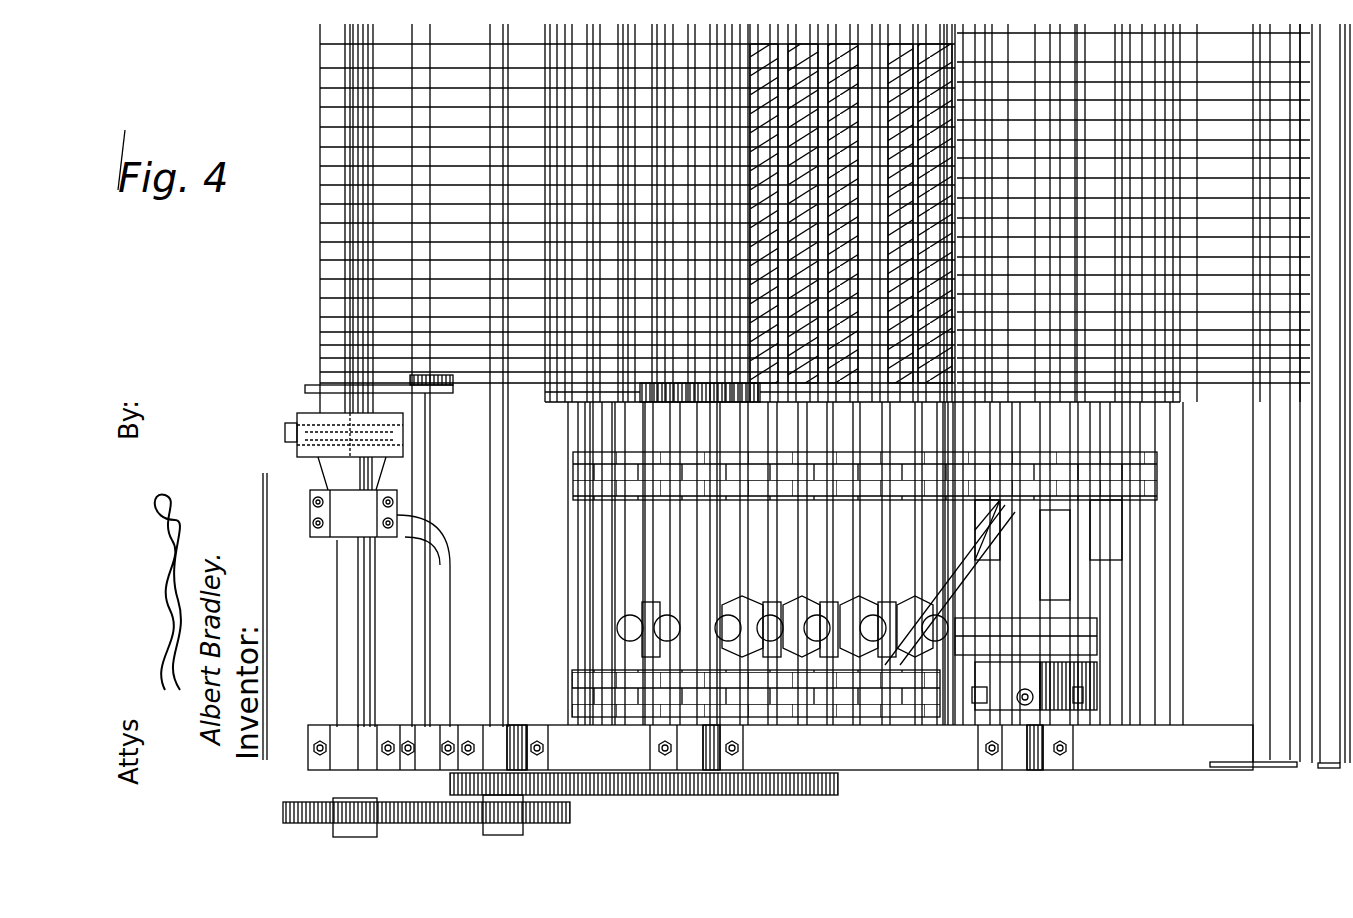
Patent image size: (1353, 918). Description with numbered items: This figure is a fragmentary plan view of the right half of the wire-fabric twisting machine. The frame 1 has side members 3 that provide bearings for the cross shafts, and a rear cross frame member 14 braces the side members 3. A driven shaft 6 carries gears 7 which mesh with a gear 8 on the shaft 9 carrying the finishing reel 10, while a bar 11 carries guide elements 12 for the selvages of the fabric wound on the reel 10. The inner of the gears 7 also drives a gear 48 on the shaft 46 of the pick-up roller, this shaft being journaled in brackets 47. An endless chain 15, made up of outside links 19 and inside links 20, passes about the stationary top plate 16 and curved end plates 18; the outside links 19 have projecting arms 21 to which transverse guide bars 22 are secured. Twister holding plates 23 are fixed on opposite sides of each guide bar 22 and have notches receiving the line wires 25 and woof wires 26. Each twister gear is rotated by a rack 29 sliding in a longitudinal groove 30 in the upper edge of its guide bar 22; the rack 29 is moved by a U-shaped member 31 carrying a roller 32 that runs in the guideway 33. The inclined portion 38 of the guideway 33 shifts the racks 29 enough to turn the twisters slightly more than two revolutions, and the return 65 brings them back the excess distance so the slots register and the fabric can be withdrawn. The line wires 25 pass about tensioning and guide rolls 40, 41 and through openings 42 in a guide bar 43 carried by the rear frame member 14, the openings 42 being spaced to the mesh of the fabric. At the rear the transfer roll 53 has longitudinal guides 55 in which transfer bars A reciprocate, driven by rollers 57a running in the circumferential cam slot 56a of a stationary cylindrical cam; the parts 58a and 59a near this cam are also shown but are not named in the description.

The frame 1 is at (945, 772).
The side members 3 is at (895, 775).
The shaft 6 is at (490, 446).
The gears 7 is at (450, 784).
The gear 8 is at (383, 823).
The shaft 9 is at (337, 666).
The finishing reel 10 is at (320, 248).
The bar 11 is at (432, 480).
The guide elements 12 is at (305, 389).
The rear cross frame member 14 is at (715, 405).
The endless chain 15 is at (849, 723).
The top plate 16 is at (749, 563).
The curved end plates 18 is at (843, 556).
The outside links 19 is at (800, 717).
The inside links 20 is at (787, 705).
The projecting arms 21 is at (830, 717).
The guide bars 22 is at (828, 548).
The twister holding plates 23 is at (785, 405).
The line wires 25 is at (898, 405).
The woof wires 26 is at (840, 405).
The rack 29 is at (812, 405).
The longitudinal groove 30 is at (832, 500).
The U-shaped member 31 is at (769, 625).
The roller 32 is at (782, 633).
The guideway 33 is at (663, 606).
The inclined portion 38 is at (975, 575).
The tensioning and guide rolls 40 is at (1300, 780).
The tensioning and guide rolls 41 is at (1275, 545).
The openings 42 is at (1182, 400).
The guide bar 43 is at (1192, 408).
The shaft 46 is at (682, 540).
The brackets 47 is at (660, 748).
The gear 48 is at (760, 796).
The transfer roll 53 is at (1092, 657).
The longitudinal guides 55 is at (1035, 640).
The circumferential slot 56a is at (985, 720).
The roller 57a is at (975, 703).
The lug 58a is at (1008, 720).
The box 59a is at (1030, 665).
The return 65 is at (790, 620).
The transfer bars A is at (1044, 530).